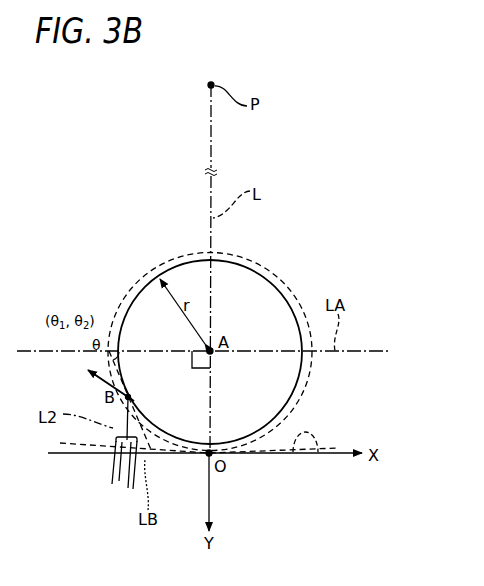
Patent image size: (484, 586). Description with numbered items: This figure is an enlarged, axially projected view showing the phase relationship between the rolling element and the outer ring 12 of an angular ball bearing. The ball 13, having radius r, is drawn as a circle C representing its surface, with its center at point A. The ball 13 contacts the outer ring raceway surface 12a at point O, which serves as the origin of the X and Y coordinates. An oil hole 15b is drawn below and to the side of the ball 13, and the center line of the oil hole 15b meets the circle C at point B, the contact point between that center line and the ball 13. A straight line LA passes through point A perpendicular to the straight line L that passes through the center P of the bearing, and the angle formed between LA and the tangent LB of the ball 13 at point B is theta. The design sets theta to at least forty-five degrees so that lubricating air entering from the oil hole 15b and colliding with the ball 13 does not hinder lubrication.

The outer ring 12 is at (269, 495).
The outer ring raceway surface 12a is at (312, 458).
The ball 13 is at (287, 262).
The oil hole 15b is at (112, 479).